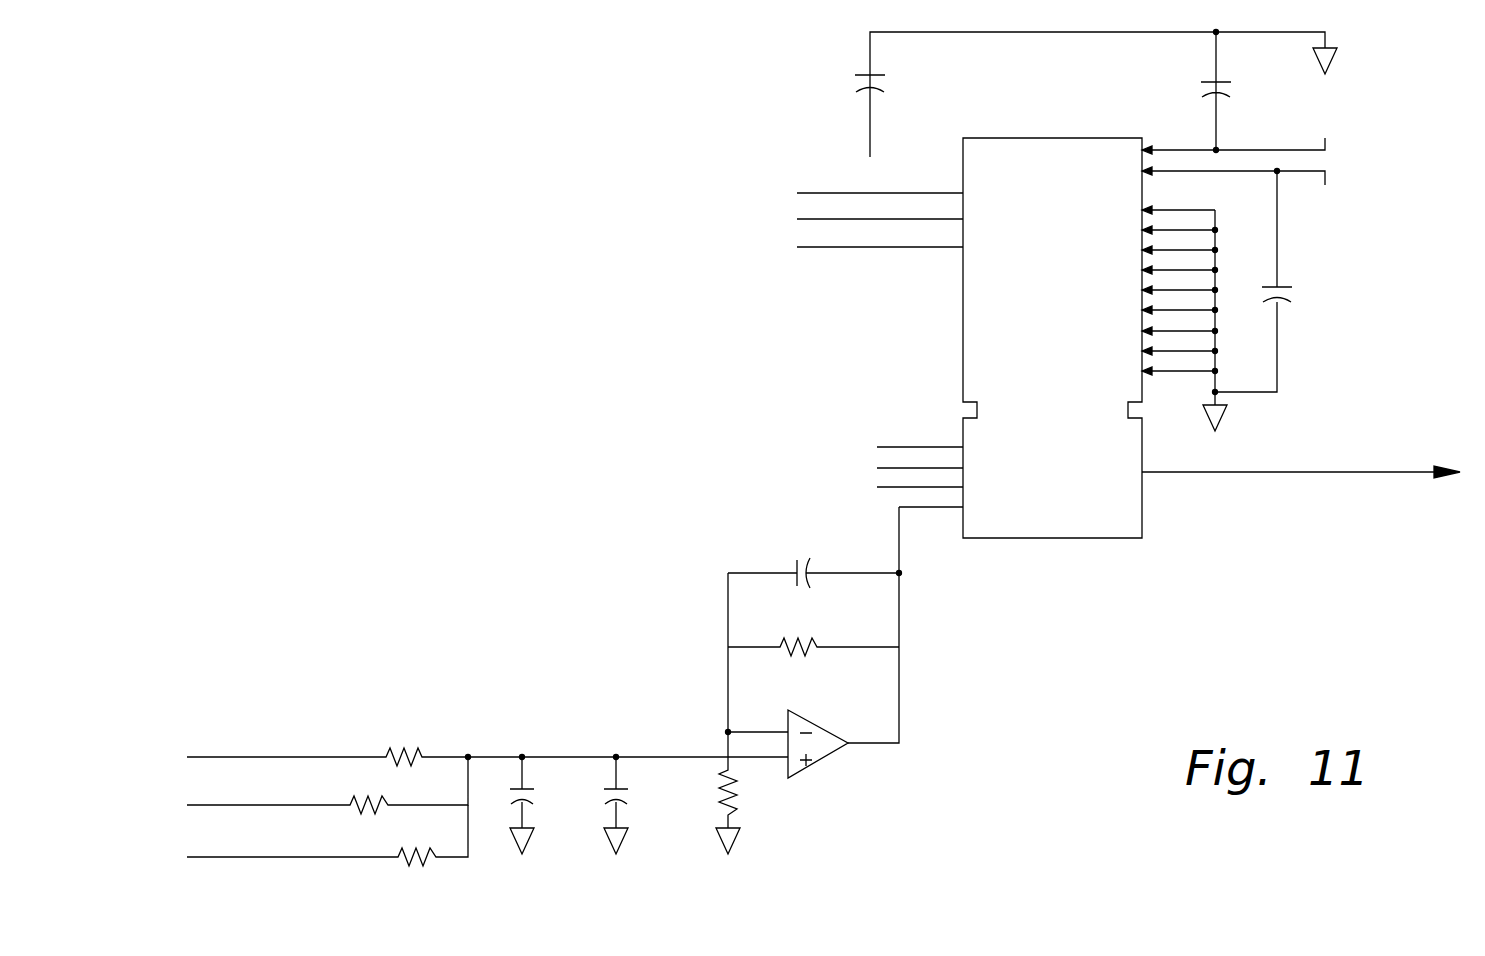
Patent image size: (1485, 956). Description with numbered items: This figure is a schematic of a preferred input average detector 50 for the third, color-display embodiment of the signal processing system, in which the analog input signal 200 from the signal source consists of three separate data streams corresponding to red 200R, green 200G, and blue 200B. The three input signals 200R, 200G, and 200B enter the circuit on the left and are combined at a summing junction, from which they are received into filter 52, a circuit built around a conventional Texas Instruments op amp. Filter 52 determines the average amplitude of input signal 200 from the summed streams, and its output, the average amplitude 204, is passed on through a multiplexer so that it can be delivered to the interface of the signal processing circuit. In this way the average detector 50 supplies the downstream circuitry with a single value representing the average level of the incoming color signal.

The input average detector 50 is at (508, 343).
The filter 52 is at (823, 748).
The input signal 200 is at (568, 757).
The green input signal 200G is at (330, 757).
The red input signal 200R is at (332, 805).
The blue input signal 200B is at (292, 884).
The average amplitude 204 is at (899, 605).